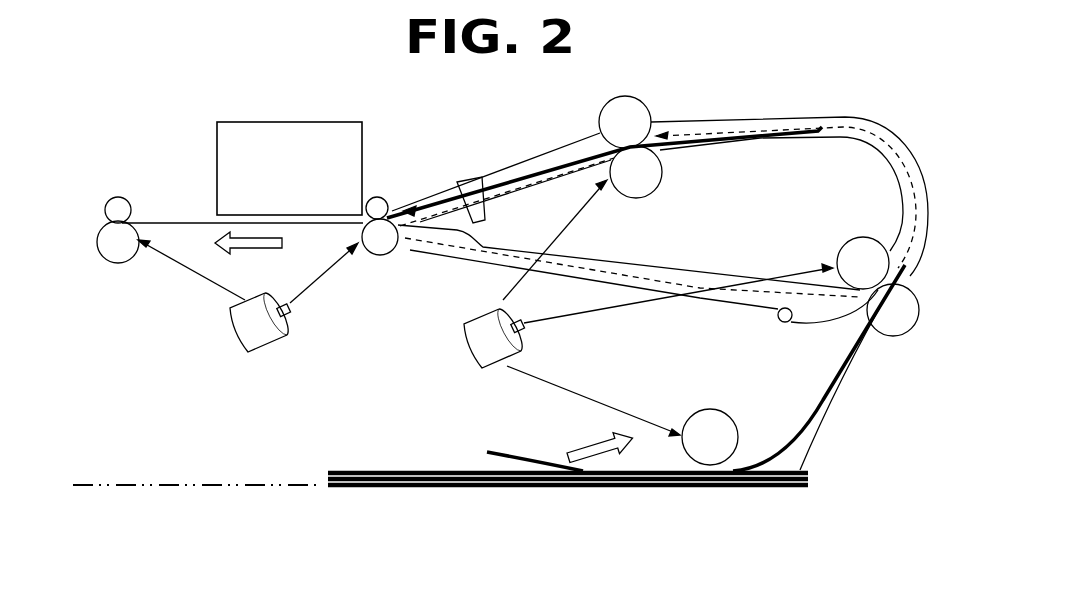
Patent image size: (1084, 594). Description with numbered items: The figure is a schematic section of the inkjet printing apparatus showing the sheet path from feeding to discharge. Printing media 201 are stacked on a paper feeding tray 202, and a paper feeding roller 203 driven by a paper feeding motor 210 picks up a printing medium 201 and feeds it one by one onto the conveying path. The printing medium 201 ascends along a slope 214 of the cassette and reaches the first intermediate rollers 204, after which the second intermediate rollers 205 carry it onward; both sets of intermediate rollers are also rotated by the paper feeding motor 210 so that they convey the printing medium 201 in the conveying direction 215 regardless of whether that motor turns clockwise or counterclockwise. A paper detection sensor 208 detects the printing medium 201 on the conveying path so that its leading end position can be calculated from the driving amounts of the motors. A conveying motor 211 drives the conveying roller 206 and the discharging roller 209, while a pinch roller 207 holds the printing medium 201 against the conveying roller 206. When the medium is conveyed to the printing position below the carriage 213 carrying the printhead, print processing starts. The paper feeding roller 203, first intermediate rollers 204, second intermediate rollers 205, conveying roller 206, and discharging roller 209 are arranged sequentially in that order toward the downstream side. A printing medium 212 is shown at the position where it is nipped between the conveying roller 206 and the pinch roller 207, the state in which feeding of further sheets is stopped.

The printing medium 201 is at (820, 384).
The paper feeding tray 202 is at (468, 488).
The paper feeding roller 203 is at (710, 409).
The first intermediate rollers 204 is at (895, 337).
The second intermediate rollers 205 is at (636, 198).
The conveying roller 206 is at (380, 255).
The pinch roller 207 is at (378, 197).
The paper detection sensor 208 is at (471, 178).
The discharging roller 209 is at (123, 263).
The paper feeding motor 210 is at (490, 372).
The conveying motor 211 is at (257, 355).
The printing medium 212 is at (780, 136).
The carriage 213 is at (340, 121).
The slope 214 is at (833, 397).
The conveying direction 215 is at (242, 250).